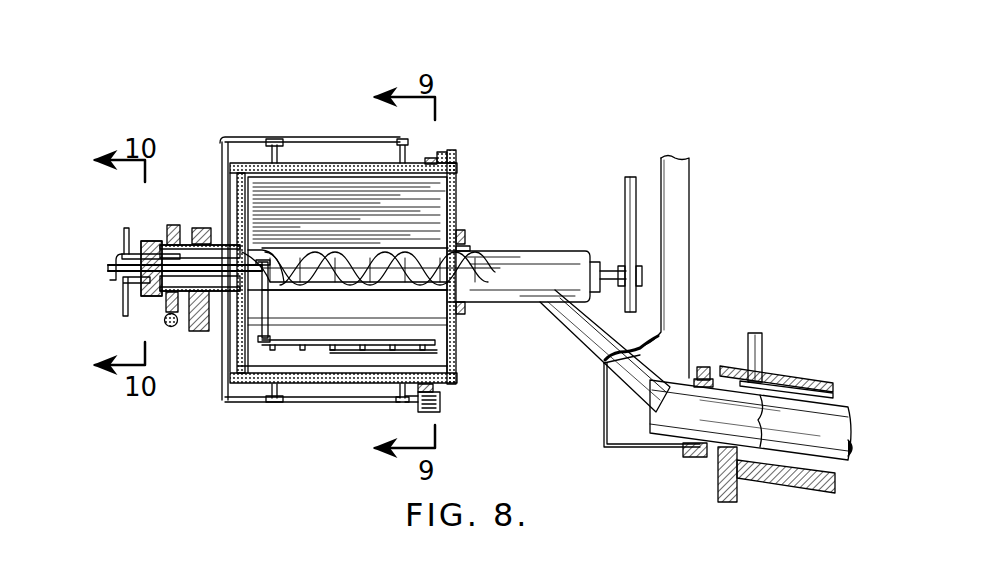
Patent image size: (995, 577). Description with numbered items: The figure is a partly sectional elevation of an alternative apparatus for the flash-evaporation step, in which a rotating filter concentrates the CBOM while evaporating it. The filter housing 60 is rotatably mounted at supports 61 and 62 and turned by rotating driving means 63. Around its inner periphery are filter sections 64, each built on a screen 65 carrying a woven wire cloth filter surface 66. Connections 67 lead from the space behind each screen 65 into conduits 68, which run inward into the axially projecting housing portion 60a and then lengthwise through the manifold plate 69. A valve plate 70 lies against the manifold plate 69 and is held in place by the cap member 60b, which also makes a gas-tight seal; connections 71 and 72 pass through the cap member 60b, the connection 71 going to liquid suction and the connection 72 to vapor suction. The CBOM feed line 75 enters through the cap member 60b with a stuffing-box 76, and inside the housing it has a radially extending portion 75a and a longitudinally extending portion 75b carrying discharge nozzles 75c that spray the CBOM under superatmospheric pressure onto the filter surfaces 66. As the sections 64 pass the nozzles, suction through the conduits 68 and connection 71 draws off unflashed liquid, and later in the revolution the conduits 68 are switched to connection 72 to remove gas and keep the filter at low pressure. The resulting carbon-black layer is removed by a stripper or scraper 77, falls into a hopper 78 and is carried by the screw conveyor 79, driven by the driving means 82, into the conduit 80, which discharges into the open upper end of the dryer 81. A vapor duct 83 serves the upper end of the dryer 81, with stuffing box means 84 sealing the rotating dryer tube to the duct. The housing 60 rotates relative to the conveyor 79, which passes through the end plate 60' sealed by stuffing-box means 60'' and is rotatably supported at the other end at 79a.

The filter housing 60 is at (343, 249).
The end plate 60' is at (459, 181).
The stuffing-box means 60'' is at (482, 262).
The axially projecting housing portion 60a is at (222, 246).
The cap member 60b is at (152, 298).
The rotatable mounting 61 is at (185, 240).
The rotatable mounting 62 is at (440, 406).
The rotating driving means 63 is at (175, 327).
The filter sections 64 is at (347, 331).
The screen 65 is at (452, 378).
The woven wire cloth filter surface 66 is at (447, 362).
The connections 67 is at (276, 150).
The conduits 68 is at (324, 138).
The manifold plate 69 is at (170, 312).
The valve plate 70 is at (120, 258).
The connection 71 is at (123, 293).
The connection 72 is at (123, 237).
The CBOM feed line 75 is at (222, 298).
The radially extending portion 75a is at (262, 322).
The longitudinally extending portion 75b is at (328, 338).
The discharge nozzles 75c is at (318, 350).
The stuffing-box 76 is at (168, 255).
The stripper or scraper 77 is at (342, 178).
The hopper 78 is at (355, 259).
The screw conveyor 79 is at (408, 258).
The rotatable support 79a is at (262, 262).
The conduit 80 is at (590, 320).
The dryer 81 is at (718, 455).
The driving means 82 is at (626, 215).
The vapor duct 83 is at (690, 282).
The stuffing box means 84 is at (707, 364).